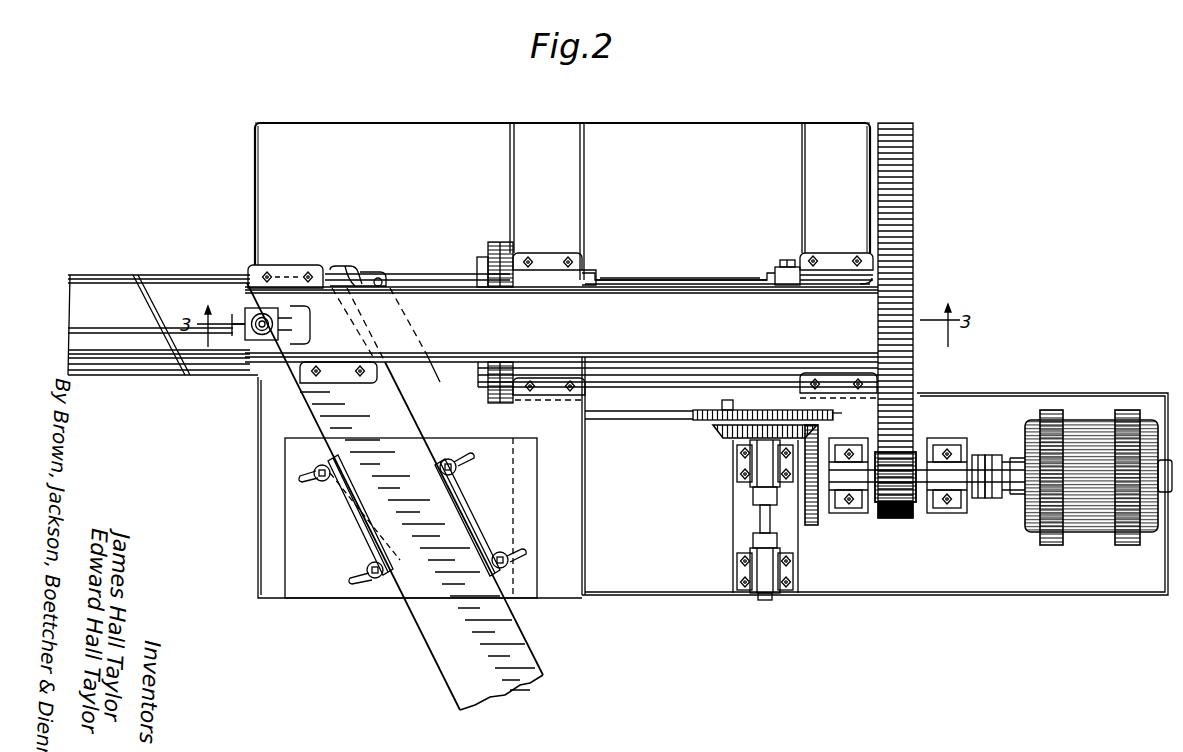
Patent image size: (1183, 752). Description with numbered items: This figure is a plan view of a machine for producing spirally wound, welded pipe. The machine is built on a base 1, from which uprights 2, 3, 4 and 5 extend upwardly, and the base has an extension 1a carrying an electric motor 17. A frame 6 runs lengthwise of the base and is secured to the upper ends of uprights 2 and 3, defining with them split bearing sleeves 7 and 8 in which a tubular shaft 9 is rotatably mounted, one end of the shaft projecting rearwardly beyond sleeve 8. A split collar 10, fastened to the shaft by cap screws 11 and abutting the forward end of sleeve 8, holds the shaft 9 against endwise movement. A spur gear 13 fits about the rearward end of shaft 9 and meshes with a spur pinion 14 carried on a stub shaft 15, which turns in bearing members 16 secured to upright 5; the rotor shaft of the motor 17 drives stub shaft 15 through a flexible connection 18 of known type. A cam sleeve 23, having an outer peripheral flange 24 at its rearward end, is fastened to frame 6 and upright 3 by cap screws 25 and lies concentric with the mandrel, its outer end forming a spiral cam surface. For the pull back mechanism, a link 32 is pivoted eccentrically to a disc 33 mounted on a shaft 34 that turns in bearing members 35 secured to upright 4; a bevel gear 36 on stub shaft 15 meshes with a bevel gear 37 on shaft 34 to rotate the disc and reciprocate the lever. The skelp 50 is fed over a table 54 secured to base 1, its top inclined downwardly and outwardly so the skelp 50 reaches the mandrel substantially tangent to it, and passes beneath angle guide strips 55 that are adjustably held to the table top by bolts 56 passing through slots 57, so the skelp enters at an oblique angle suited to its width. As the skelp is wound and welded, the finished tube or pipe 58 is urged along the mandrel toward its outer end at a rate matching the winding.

The base 1 is at (258, 122).
The extension of the base 1a is at (1033, 395).
The upright 2 is at (802, 193).
The upright 3 is at (568, 220).
The upright 4 is at (733, 505).
The upright 5 is at (925, 510).
The frame 6 is at (640, 292).
The split bearing sleeve 7 is at (588, 268).
The split bearing sleeve 8 is at (835, 280).
The tubular shaft 9 is at (693, 288).
The split collar 10 is at (775, 275).
The cap screws 11 is at (783, 262).
The spur gear 13 is at (900, 210).
The spur pinion 14 is at (915, 450).
The stub shaft 15 is at (873, 490).
The bearing members 16 is at (960, 455).
The electric motor 17 is at (1085, 535).
The flexible connection 18 is at (988, 500).
The cam sleeve 23 is at (447, 274).
The outer peripheral flange 24 is at (492, 252).
The cap screws 25 is at (481, 258).
The link 32 is at (622, 418).
The disc 33 is at (765, 410).
The shaft 34 is at (762, 520).
The bearing members 35 is at (740, 462).
The bevel gear 36 is at (812, 525).
The bevel gear 37 is at (715, 432).
The chute 50 is at (432, 660).
The table 54 is at (317, 590).
The angle guide strips 55 is at (355, 528).
The bolts 56 is at (316, 470).
The slots 57 is at (305, 480).
The tube or pipe 58 is at (122, 376).